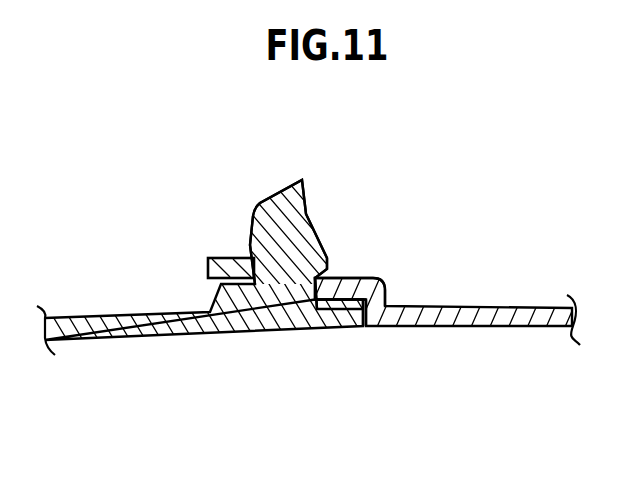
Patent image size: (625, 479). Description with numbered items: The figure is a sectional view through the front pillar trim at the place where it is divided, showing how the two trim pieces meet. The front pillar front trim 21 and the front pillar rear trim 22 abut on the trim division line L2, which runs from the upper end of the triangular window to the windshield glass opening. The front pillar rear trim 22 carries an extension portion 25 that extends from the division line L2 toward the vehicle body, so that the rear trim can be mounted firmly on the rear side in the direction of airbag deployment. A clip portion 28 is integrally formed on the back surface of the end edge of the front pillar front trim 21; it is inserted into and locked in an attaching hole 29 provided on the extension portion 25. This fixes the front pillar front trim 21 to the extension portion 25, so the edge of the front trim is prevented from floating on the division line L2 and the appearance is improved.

The front pillar front trim 21 is at (157, 334).
The front pillar rear trim 22 is at (485, 327).
The extension portion 25 is at (355, 279).
The clip portion 28 is at (306, 213).
The attaching hole 29 is at (253, 258).
The division line L2 is at (365, 338).